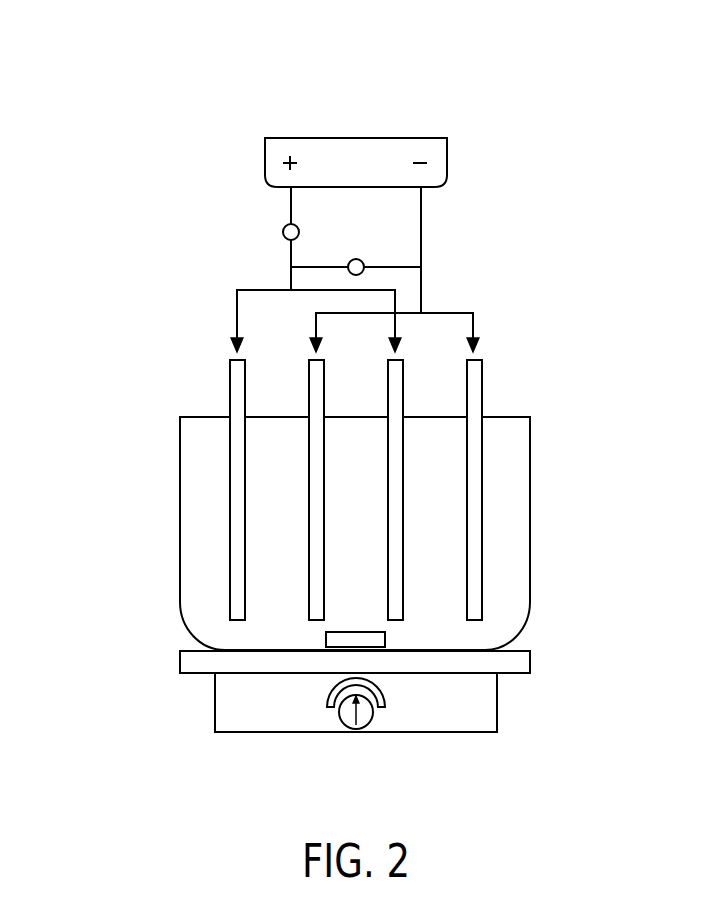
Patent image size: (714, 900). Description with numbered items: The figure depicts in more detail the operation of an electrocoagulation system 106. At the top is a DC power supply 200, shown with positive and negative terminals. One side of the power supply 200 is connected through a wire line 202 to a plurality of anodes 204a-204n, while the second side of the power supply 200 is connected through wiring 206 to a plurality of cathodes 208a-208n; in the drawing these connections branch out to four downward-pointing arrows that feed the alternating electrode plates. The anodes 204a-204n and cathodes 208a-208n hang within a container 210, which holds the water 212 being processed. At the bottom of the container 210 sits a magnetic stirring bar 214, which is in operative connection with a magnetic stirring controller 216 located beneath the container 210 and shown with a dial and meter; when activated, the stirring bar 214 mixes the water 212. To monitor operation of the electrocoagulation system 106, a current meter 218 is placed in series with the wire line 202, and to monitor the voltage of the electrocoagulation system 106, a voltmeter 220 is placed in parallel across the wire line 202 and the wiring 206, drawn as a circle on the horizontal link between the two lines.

The electrocoagulation system 106 is at (72, 78).
The DC power supply 200 is at (356, 138).
The wire line 202 is at (290, 210).
The wiring 206 is at (421, 210).
The current meter 218 is at (283, 234).
The voltmeter 220 is at (357, 258).
The anodes 204a-204n is at (237, 322).
The cathodes 208a-208n is at (475, 322).
The container 210 is at (180, 490).
The water 212 is at (517, 495).
The magnetic stirring bar 214 is at (333, 648).
The magnetic stirring controller 216 is at (215, 705).